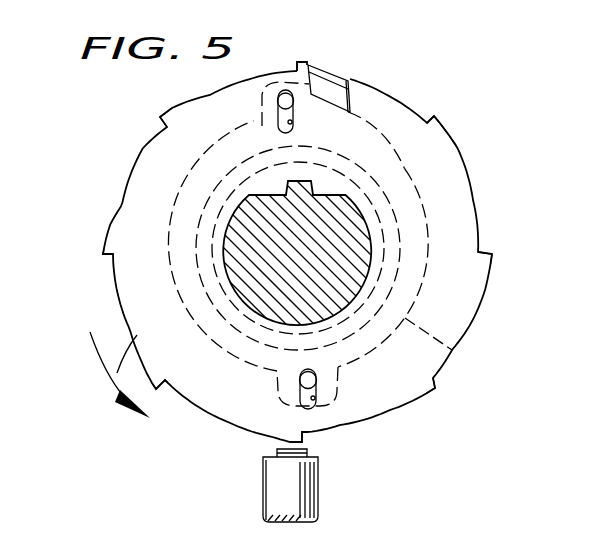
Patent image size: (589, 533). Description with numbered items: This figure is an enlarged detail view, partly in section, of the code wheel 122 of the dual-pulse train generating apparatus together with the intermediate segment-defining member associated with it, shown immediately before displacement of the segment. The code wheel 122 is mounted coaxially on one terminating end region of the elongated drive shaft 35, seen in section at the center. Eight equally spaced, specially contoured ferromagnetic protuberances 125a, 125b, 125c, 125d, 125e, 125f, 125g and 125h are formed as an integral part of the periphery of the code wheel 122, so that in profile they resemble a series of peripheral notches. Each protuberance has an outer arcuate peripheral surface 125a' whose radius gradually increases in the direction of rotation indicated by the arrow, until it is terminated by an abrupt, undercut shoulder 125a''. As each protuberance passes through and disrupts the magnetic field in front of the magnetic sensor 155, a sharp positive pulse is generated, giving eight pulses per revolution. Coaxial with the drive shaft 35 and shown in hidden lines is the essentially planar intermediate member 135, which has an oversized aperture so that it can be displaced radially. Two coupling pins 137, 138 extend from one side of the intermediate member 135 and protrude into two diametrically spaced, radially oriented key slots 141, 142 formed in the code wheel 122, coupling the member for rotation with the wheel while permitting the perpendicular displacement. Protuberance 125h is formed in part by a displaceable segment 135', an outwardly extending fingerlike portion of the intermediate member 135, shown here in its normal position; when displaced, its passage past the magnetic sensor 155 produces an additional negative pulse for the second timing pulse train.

The code wheel 122 is at (142, 155).
The protuberance 125a is at (468, 117).
The arcuate peripheral surface 125a' is at (483, 142).
The undercut shoulder 125a'' is at (447, 96).
The protuberance 125b is at (492, 258).
The protuberance 125c is at (426, 397).
The protuberance 125d is at (267, 437).
The protuberance 125e is at (157, 389).
The protuberance 125f is at (105, 227).
The protuberance 125g is at (170, 108).
The protuberance 125h is at (306, 58).
The intermediate member 135 is at (332, 244).
The displaceable segment 135' is at (342, 69).
The coupling pin 137 is at (284, 101).
The coupling pin 138 is at (300, 391).
The key slot 141 is at (292, 122).
The key slot 142 is at (318, 396).
The magnetic sensor 155 is at (319, 480).
The drive shaft 35 is at (232, 243).